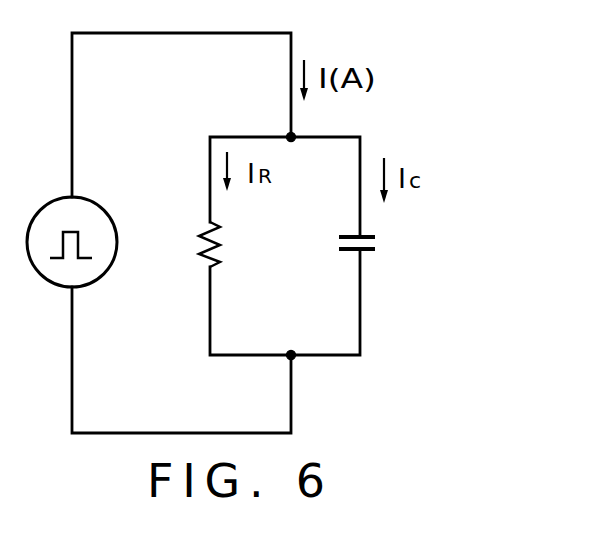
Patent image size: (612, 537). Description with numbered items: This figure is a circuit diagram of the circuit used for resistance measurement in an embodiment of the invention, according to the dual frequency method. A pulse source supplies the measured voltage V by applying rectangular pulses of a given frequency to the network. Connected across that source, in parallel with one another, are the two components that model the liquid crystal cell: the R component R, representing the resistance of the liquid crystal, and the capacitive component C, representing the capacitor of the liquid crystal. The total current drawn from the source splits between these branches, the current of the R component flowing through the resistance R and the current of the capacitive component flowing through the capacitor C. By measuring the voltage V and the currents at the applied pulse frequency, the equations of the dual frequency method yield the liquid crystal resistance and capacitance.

The measured voltage V is at (89, 225).
The R component R is at (245, 244).
The capacitive component C is at (391, 238).